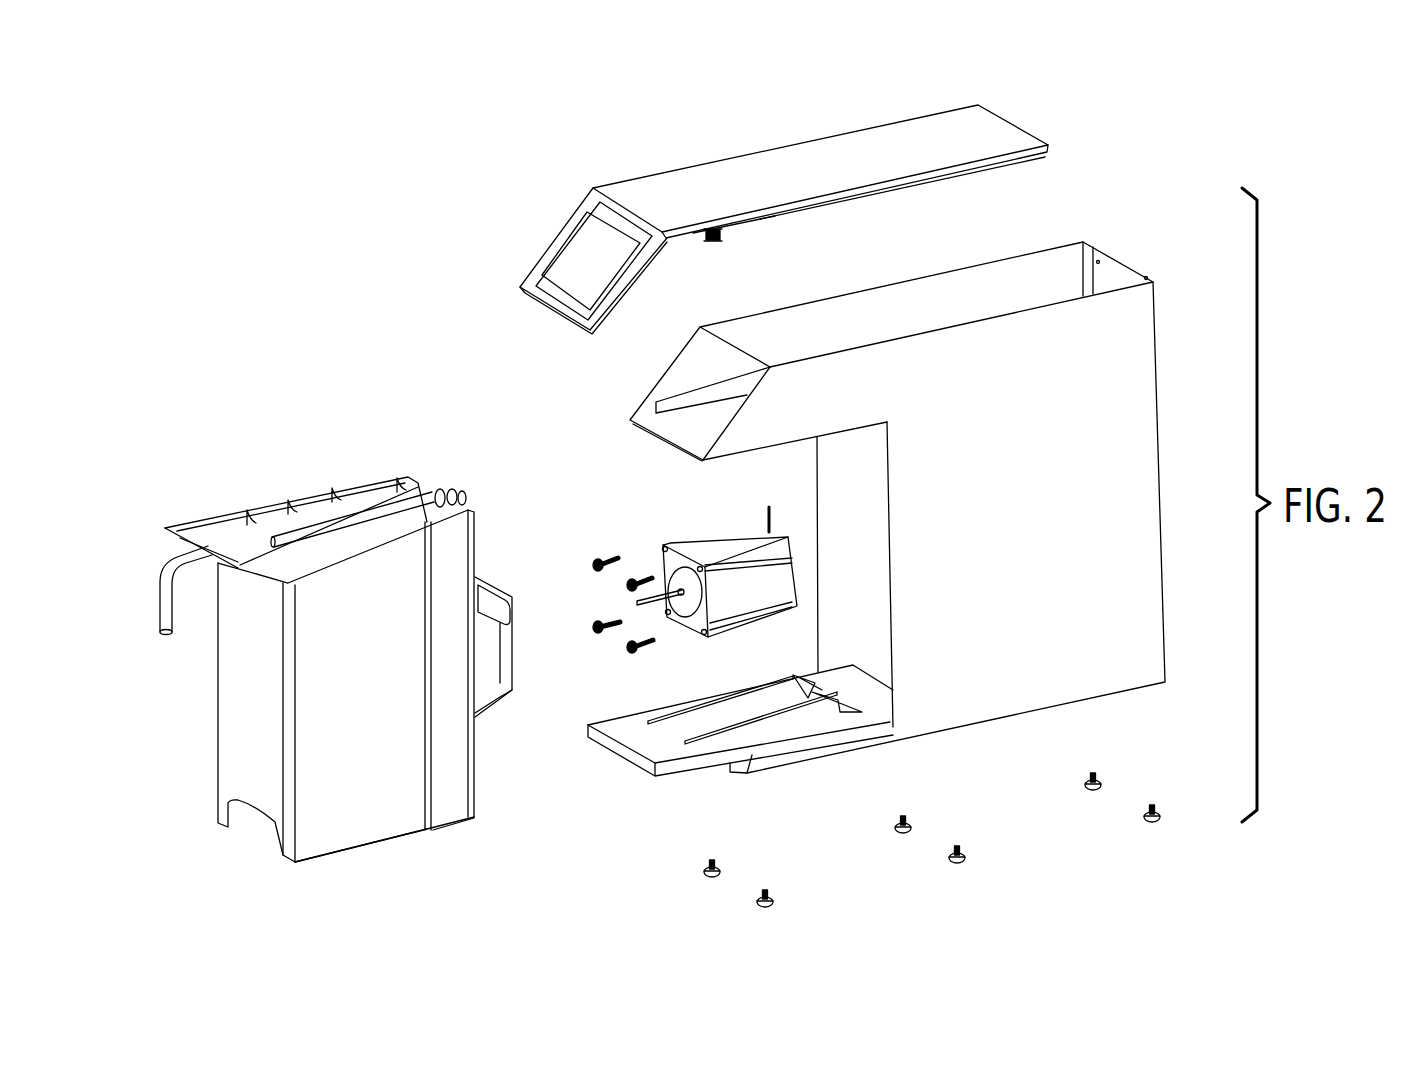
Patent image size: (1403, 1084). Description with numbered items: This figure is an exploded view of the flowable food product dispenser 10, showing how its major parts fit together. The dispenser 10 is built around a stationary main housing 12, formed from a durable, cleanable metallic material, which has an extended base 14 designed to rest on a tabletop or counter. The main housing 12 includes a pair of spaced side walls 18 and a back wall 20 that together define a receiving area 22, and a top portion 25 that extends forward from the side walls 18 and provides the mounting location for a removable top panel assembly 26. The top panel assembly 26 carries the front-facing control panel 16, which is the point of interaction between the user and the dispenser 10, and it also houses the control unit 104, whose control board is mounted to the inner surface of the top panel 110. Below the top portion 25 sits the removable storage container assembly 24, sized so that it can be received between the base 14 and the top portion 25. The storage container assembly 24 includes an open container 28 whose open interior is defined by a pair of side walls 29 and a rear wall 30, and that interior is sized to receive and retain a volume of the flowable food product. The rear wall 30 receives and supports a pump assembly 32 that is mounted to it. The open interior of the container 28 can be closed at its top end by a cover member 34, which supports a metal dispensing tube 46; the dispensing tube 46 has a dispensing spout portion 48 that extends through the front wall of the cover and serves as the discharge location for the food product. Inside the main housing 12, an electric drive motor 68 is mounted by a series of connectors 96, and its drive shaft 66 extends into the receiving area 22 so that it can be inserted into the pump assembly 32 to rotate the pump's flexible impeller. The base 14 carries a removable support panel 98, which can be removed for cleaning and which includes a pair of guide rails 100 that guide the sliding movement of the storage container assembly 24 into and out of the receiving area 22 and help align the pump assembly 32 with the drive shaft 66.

The food product dispenser 10 is at (1110, 188).
The main housing 12 is at (972, 254).
The extended base 14 is at (843, 747).
The front-facing control panel 16 is at (587, 247).
The side walls 18 is at (877, 308).
The back wall 20 is at (1117, 280).
The receiving area 22 is at (853, 615).
The removable storage container assembly 24 is at (343, 464).
The top portion 25 is at (802, 388).
The removable top panel assembly 26 is at (758, 142).
The open container 28 is at (245, 725).
The side walls 29 is at (368, 823).
The rear wall 30 is at (477, 782).
The pump assembly 32 is at (497, 580).
The cover member 34 is at (273, 499).
The dispensing tube 46 is at (388, 508).
The dispensing spout portion 48 is at (163, 608).
The drive shaft 66 is at (637, 603).
The electric drive motor 68 is at (730, 542).
The connectors 96 is at (620, 560).
The removable support panel 98 is at (695, 762).
The guide rails 100 is at (768, 722).
The control unit 104 is at (710, 252).
The top panel 110 is at (847, 153).